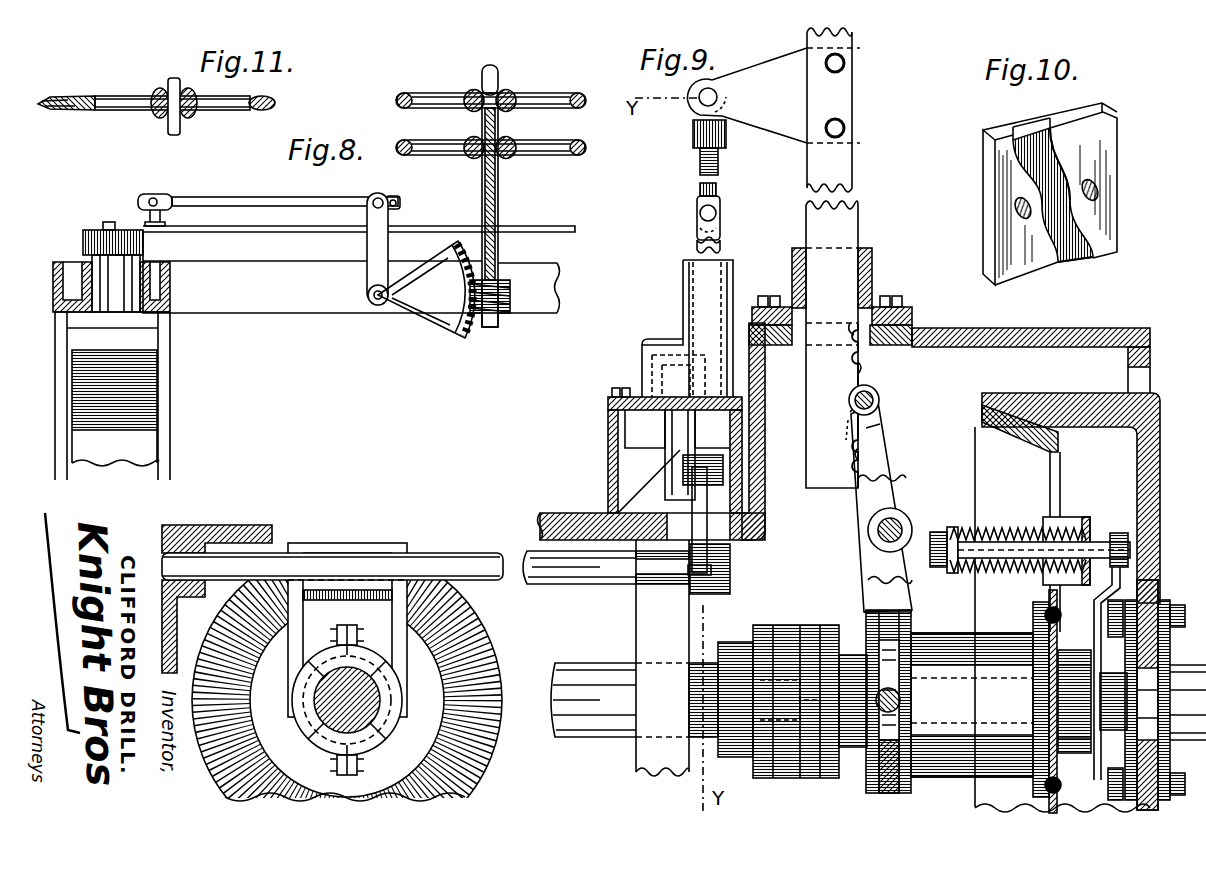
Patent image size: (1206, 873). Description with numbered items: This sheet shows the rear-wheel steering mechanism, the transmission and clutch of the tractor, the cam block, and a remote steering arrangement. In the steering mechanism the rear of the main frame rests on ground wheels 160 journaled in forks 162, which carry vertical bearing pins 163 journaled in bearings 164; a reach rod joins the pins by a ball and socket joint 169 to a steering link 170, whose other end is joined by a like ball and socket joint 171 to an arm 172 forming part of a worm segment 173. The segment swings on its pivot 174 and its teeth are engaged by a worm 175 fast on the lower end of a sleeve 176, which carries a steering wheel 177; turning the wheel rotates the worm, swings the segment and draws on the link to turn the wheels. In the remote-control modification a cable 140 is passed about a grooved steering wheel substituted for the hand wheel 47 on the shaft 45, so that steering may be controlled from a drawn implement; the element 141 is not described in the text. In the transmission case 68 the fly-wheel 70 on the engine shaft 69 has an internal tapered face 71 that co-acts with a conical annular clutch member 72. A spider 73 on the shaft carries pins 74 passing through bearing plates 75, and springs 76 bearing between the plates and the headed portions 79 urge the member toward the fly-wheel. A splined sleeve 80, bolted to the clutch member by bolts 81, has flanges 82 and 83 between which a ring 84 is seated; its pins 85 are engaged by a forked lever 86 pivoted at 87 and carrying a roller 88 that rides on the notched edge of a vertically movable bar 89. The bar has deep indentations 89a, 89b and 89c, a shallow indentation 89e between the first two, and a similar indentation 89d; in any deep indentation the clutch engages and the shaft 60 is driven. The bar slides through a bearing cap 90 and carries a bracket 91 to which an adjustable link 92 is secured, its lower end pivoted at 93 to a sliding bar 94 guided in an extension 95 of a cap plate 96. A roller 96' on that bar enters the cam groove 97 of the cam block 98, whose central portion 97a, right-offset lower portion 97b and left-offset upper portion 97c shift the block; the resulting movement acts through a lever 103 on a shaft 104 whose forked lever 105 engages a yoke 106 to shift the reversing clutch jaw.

In FIG. 11, the cable 140 is at (90, 111).
In FIG. 11, the rod end 141 is at (240, 107).
In FIG. 11, the shaft 45 is at (181, 125).
In FIG. 8, the shaft 45 is at (482, 76).
In FIG. 8, the hand wheel 47 is at (577, 92).
In FIG. 8, the ground wheels 160 is at (115, 408).
In FIG. 8, the forks 162 is at (170, 412).
In FIG. 8, the vertical bearing pins 163 is at (92, 266).
In FIG. 8, the bearings 164 is at (162, 288).
In FIG. 8, the ball and socket joint 169 is at (150, 197).
In FIG. 8, the steering link 170 is at (318, 186).
In FIG. 8, the ball and socket joint 171 is at (398, 195).
In FIG. 8, the arm 172 is at (367, 250).
In FIG. 8, the worm segment 173 is at (463, 336).
In FIG. 8, the pivot 174 is at (379, 310).
In FIG. 8, the worm 175 is at (512, 273).
In FIG. 8, the sleeve 176 is at (498, 202).
In FIG. 8, the steering wheel 177 is at (540, 143).
In FIG. 8, the forked lever 105 is at (404, 588).
In FIG. 8, the yoke 106 is at (400, 718).
In FIG. 9, the shaft 60 is at (562, 741).
In FIG. 9, the transmission case 68 is at (1028, 330).
In FIG. 9, the engine shaft 69 is at (1181, 670).
In FIG. 9, the motor fly-wheel 70 is at (1090, 398).
In FIG. 9, the internal tapered face 71 is at (1012, 408).
In FIG. 9, the conical annular clutch member 72 is at (1060, 468).
In FIG. 9, the spider 73 is at (1094, 652).
In FIG. 9, the pins 74 is at (996, 528).
In FIG. 9, the bearing plates 75 is at (1106, 528).
In FIG. 9, the springs 76 is at (1044, 541).
In FIG. 9, the nuts or headed portions 79 is at (940, 530).
In FIG. 9, the sleeve 80 is at (972, 705).
In FIG. 9, the bolts 81 is at (1040, 615).
In FIG. 9, the flange 82 is at (858, 790).
In FIG. 9, the flange 83 is at (905, 790).
In FIG. 9, the ring 84 is at (890, 795).
In FIG. 9, the pins 85 is at (900, 700).
In FIG. 9, the forked lever 86 is at (870, 586).
In FIG. 9, the pivot 87 is at (874, 540).
In FIG. 9, the roller 88 is at (880, 398).
In FIG. 9, the vertically movable bar 89 is at (835, 405).
In FIG. 9, the deep indentation 89a is at (852, 330).
In FIG. 9, the deep indentation 89b is at (878, 430).
In FIG. 9, the deep indentation 89c is at (858, 455).
In FIG. 9, the serration 89d is at (852, 416).
In FIG. 9, the shallow indentation 89e is at (862, 375).
In FIG. 9, the bearing cap 90 is at (873, 276).
In FIG. 9, the bracket 91 is at (774, 110).
In FIG. 9, the link 92 is at (700, 140).
In FIG. 9, the pivotal connection 93 is at (722, 213).
In FIG. 9, the sliding bar 94 is at (728, 256).
In FIG. 9, the extension 95 is at (688, 302).
In FIG. 9, the cap plate 96 is at (654, 450).
In FIG. 9, the roller 96' is at (733, 453).
In FIG. 9, the lever 103 is at (708, 536).
In FIG. 9, the shaft 104 is at (584, 590).
In FIG. 10, the cam groove 97 is at (1062, 178).
In FIG. 10, the central portion 97a is at (1052, 195).
In FIG. 10, the lower portion 97b is at (1092, 254).
In FIG. 10, the upper portion 97c is at (1036, 132).
In FIG. 10, the cam block 98 is at (1098, 210).